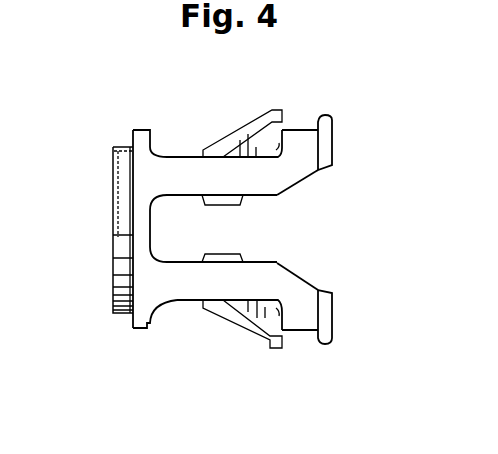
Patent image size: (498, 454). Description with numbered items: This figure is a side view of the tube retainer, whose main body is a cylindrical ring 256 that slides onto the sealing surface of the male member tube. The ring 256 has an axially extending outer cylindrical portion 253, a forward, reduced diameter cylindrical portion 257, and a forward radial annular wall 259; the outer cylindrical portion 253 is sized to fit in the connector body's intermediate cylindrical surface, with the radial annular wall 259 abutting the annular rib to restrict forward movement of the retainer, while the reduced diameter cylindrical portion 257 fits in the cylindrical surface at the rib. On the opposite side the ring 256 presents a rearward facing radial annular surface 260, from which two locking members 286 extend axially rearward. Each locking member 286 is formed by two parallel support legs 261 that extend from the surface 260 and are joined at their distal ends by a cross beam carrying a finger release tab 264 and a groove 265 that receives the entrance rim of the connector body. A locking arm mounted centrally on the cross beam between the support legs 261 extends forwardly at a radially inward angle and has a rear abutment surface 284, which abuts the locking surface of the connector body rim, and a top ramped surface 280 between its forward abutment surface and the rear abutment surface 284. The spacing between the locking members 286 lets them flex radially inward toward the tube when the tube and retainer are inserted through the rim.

The outer cylindrical portion 253 is at (148, 331).
The cylindrical ring 256 is at (140, 131).
The reduced diameter cylindrical portion 257 is at (118, 316).
The forward radial annular wall 259 is at (130, 320).
The rearward facing radial annular surface 260 is at (150, 235).
The support legs 261 is at (168, 164).
The finger release tab 264 is at (329, 117).
The groove 265 is at (302, 131).
The top ramped surface 280 is at (238, 132).
The rear abutment surface 284 is at (283, 346).
The locking members 286 is at (332, 149).